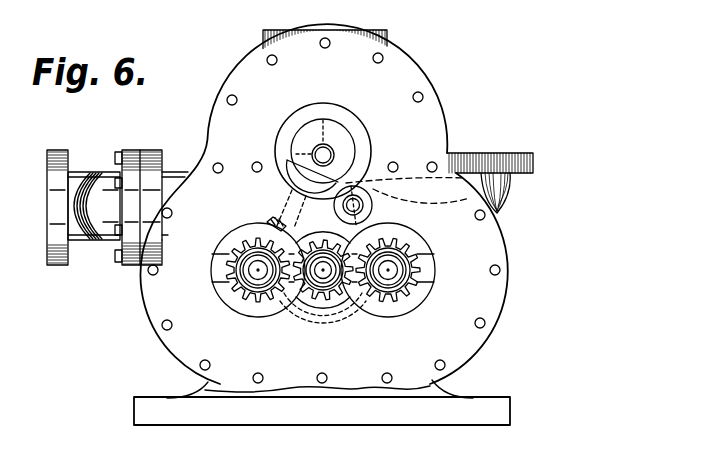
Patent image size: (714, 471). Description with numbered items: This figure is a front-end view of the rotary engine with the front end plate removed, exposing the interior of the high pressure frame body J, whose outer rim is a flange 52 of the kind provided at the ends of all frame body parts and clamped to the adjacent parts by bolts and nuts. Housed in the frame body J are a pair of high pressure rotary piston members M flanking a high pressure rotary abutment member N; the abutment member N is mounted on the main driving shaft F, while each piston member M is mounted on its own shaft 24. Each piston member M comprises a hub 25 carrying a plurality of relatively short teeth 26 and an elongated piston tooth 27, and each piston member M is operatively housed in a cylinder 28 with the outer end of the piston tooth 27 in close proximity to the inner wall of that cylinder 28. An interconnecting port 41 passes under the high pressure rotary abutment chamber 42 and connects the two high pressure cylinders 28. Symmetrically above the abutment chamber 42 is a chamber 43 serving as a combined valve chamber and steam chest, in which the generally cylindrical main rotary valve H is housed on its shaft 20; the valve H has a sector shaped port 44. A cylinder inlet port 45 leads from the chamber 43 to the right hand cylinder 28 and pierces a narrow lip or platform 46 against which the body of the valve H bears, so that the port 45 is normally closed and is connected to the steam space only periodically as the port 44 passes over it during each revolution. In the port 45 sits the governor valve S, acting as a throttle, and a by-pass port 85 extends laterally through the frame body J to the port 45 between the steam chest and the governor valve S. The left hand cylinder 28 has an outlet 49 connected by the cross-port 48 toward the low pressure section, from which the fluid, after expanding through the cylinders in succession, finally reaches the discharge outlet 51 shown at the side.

The high pressure frame body J is at (410, 63).
The main rotary valve H is at (352, 133).
The governor valve S is at (363, 208).
The high pressure rotary piston member M is at (230, 296).
The main driving shaft F is at (304, 311).
The high pressure rotary abutment member N is at (328, 305).
The shaft 20 is at (335, 154).
The shaft 24 is at (240, 285).
The hub 25 is at (247, 307).
The short teeth 26 is at (230, 278).
The piston tooth 27 is at (406, 282).
The high pressure cylinder 28 is at (238, 294).
The interconnecting port 41 is at (300, 310).
The high pressure rotary abutment chamber 42 is at (340, 312).
The chamber 43 is at (348, 113).
The sector shaped port 44 is at (310, 137).
The cylinder inlet port 45 is at (287, 160).
The lip or platform 46 is at (291, 177).
The port 48 is at (290, 210).
The outlet 49 is at (267, 222).
The discharge outlet 51 is at (46, 200).
The flange 52 is at (205, 146).
The by-pass port 85 is at (462, 192).